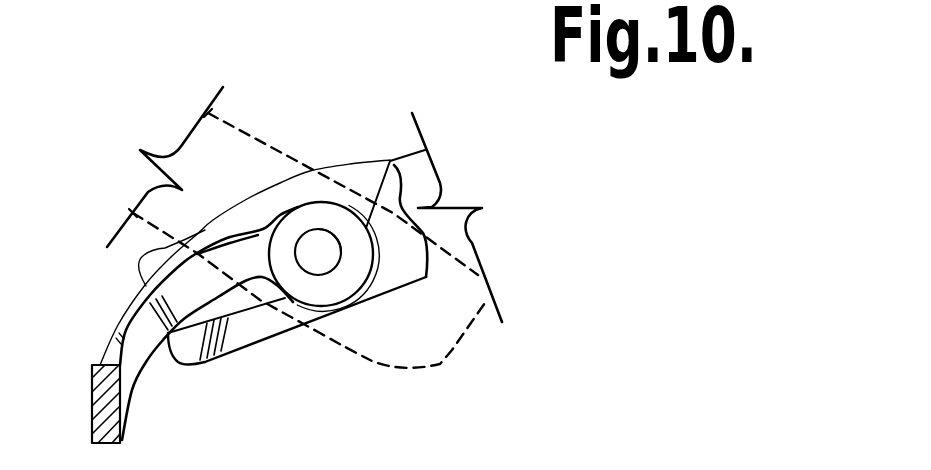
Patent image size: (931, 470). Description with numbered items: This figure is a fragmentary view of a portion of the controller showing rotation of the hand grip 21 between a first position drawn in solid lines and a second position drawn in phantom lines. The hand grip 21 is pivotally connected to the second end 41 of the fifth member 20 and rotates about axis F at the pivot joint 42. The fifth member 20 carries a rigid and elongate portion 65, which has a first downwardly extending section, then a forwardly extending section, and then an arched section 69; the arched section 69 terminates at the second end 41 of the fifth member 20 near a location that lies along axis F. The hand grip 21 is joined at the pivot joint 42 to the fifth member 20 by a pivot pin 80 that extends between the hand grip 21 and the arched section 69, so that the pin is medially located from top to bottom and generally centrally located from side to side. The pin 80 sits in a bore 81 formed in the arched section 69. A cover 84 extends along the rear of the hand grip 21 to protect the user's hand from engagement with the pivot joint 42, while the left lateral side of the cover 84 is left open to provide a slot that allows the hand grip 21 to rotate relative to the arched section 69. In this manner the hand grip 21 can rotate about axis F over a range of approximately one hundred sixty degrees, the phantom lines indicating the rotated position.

The fifth member 20 is at (126, 418).
The hand grip 21 is at (213, 362).
The second end 41 is at (287, 304).
The pivot joint 42 is at (304, 249).
The rigid and elongate portion 65 is at (90, 382).
The arched section 69 is at (128, 307).
The pivot pin 80 is at (322, 268).
The bore 81 is at (319, 239).
The cover 84 is at (417, 163).